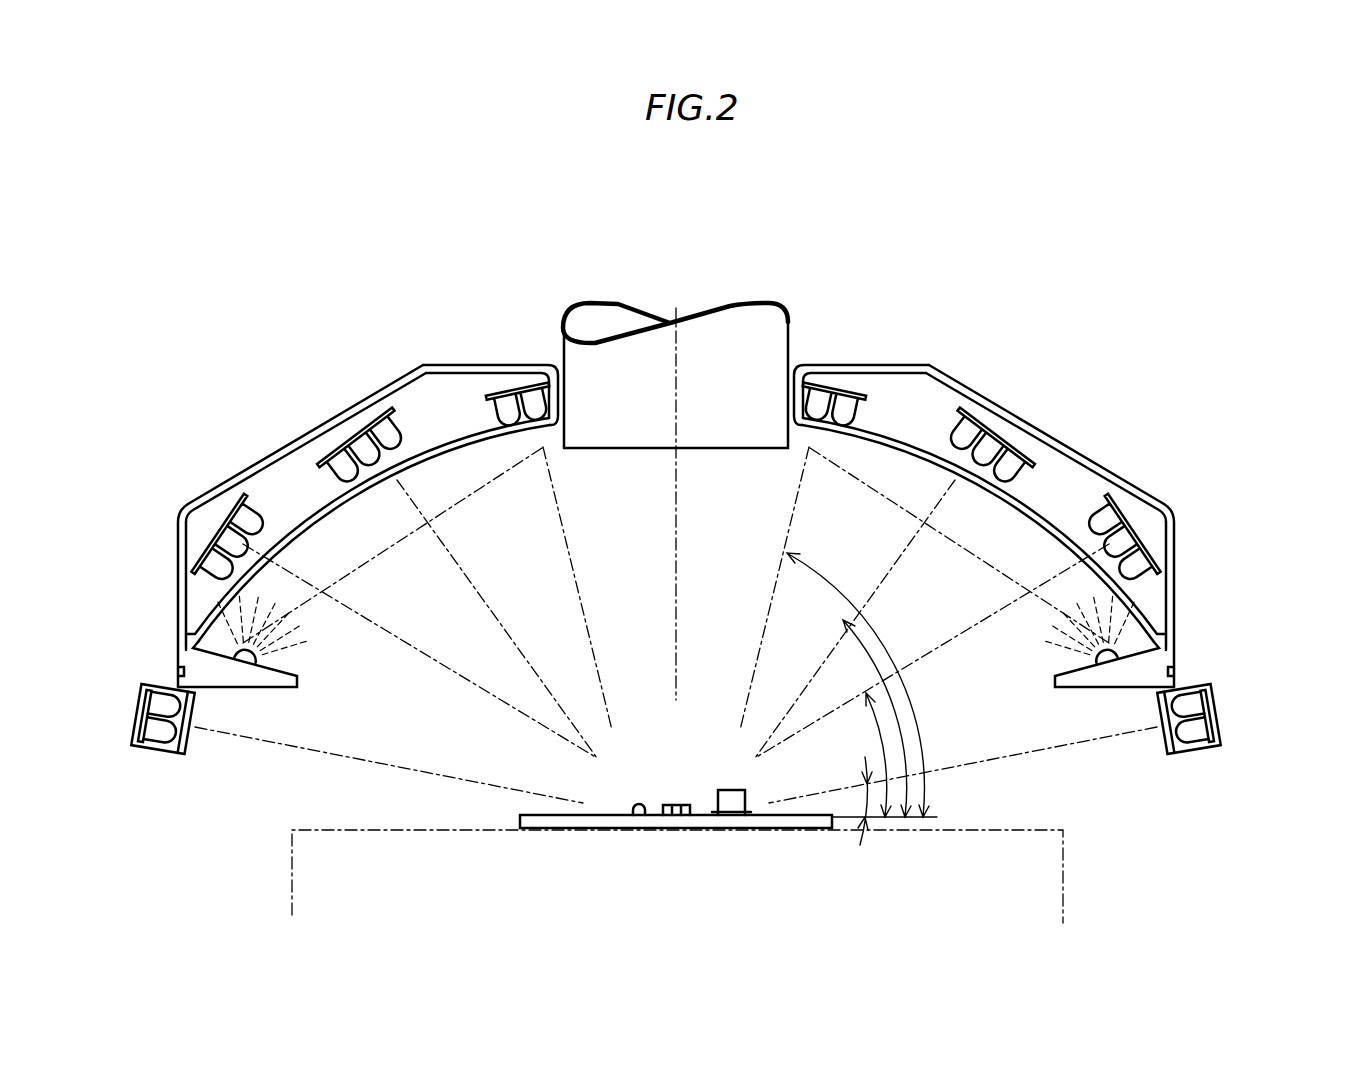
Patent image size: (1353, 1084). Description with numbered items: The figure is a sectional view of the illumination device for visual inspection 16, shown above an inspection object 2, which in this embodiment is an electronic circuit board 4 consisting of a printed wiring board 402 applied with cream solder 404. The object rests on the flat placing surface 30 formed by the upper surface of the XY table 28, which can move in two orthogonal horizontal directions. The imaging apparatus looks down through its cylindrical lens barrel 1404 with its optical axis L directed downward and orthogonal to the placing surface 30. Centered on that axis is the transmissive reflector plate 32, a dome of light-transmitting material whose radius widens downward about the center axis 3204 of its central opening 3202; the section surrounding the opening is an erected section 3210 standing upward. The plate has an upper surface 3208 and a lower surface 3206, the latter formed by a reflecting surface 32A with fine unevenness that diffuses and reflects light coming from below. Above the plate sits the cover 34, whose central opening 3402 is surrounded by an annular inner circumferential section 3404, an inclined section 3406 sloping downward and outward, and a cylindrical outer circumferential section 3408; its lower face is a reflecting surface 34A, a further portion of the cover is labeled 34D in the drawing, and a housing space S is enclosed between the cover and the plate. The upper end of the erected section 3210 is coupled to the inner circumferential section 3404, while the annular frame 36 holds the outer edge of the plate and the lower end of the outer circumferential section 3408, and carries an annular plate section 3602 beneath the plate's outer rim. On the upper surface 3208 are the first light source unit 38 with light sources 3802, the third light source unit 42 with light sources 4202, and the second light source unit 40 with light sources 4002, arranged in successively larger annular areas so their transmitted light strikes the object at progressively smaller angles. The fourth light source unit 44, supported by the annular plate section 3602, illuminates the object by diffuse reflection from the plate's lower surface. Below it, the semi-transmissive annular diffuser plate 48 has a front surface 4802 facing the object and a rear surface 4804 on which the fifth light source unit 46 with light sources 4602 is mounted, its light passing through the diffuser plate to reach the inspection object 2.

The illumination device for visual inspection 16 is at (896, 213).
The opening 3202 is at (676, 323).
The erected section 3210 is at (788, 393).
The lens barrel 1404 is at (566, 374).
The center axis 3204 is at (675, 360).
The opening 3402 is at (545, 363).
The inner circumferential section 3404 is at (458, 362).
The cover 34 is at (324, 480).
The reflecting surface 34A is at (393, 396).
The inclined section 3406 is at (285, 467).
The inner wall 34D is at (263, 468).
The housing space S is at (289, 486).
The outer circumferential section 3408 is at (180, 571).
The first light source unit 38 is at (816, 336).
The light sources 3802 is at (841, 433).
The transmissive reflector plate 32 is at (1017, 462).
The third light source unit 42 is at (1000, 393).
The light sources 4202 is at (996, 432).
The upper surface 3208 is at (1046, 524).
The lower surface 3206 is at (999, 501).
The reflecting surface 32A is at (1050, 528).
The second light source unit 40 is at (1156, 509).
The light sources 4002 is at (1140, 527).
The fourth light source unit 44 is at (1150, 625).
The annular plate section 3602 is at (1155, 637).
The frame 36 is at (1073, 666).
The fifth light source unit 46 is at (1243, 674).
The light sources 4602 is at (1190, 698).
The rear surface 4804 is at (1197, 748).
The diffuser plate 48 is at (1159, 759).
The front surface 4802 is at (1162, 740).
The XY table 28 is at (723, 863).
The placing surface 30 is at (1020, 830).
The inspection object 2 is at (717, 872).
The electronic circuit board 4 is at (570, 842).
The printed wiring board 402 is at (604, 814).
The cream solder 404 is at (678, 805).
The optical axis L is at (684, 512).